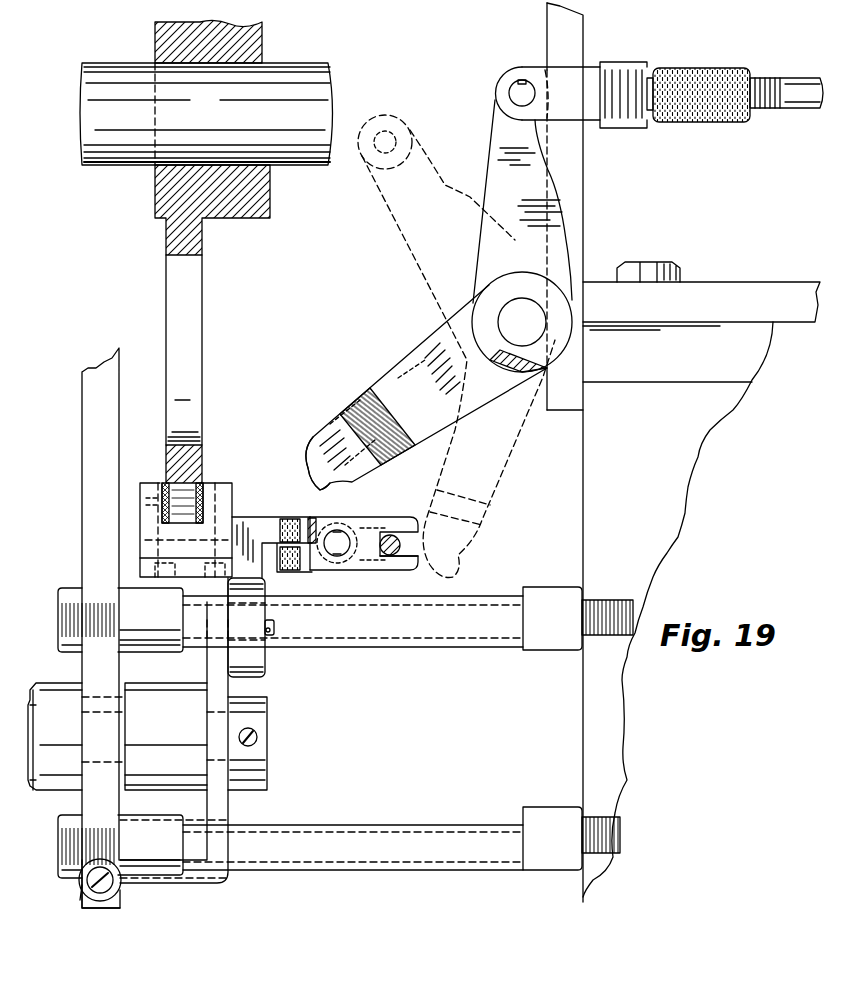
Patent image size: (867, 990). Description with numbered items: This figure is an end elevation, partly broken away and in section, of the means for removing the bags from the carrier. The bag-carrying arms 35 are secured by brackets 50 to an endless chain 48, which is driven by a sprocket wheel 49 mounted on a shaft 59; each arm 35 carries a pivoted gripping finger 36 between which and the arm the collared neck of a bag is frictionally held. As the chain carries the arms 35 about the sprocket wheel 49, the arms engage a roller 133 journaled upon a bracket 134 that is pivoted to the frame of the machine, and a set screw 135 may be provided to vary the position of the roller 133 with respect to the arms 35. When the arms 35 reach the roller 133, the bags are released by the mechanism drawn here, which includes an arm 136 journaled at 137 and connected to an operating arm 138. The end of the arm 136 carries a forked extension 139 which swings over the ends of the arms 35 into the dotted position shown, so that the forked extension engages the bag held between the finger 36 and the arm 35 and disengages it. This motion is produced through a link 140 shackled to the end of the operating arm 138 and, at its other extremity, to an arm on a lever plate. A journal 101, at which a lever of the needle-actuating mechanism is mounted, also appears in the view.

The shaft 59 is at (276, 80).
The link 140 is at (816, 103).
The operating arm 138 is at (550, 218).
The journal 137 is at (526, 318).
The arm 136 is at (410, 372).
The forked extension 139 is at (322, 452).
The sprocket wheel 49 is at (201, 441).
The endless chain 48 is at (203, 487).
The bracket 50 is at (226, 518).
The arm 35 is at (378, 525).
The gripping finger 36 is at (383, 563).
The roller 133 is at (256, 657).
The bracket 134 is at (219, 802).
The journal 101 is at (33, 762).
The set screw 135 is at (102, 890).